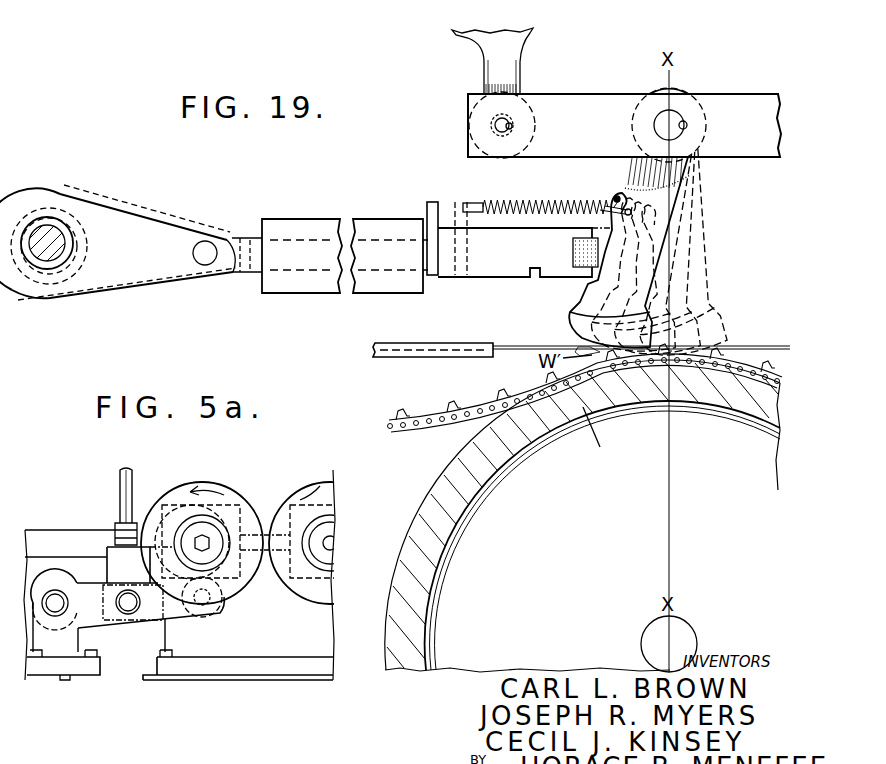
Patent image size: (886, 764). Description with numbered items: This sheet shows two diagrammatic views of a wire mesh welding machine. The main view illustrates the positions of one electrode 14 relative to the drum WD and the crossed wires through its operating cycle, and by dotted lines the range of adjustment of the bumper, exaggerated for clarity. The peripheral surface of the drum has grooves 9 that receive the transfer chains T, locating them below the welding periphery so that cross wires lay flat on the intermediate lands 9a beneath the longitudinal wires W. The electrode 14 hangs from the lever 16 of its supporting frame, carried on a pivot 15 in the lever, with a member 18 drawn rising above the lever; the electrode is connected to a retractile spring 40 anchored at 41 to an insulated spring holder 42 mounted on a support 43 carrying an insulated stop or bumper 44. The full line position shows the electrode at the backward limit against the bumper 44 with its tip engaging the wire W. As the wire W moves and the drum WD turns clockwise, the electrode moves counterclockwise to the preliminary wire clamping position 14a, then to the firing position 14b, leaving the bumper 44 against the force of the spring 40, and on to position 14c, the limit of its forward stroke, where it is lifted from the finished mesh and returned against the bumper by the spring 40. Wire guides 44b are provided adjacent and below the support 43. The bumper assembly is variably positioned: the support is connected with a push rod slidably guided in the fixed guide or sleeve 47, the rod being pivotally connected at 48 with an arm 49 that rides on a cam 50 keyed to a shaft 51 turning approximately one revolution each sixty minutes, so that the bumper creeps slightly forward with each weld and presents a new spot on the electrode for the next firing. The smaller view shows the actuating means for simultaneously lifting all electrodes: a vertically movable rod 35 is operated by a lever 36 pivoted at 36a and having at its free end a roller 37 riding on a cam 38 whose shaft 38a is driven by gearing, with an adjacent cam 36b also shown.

In FIG. 19, the grooves 9 is at (418, 490).
In FIG. 19, the intermediate lands 9a is at (456, 450).
In FIG. 19, the electrode 14 is at (700, 222).
In FIG. 19, the preliminary wire clamping position 14a is at (690, 250).
In FIG. 19, the firing position 14b is at (705, 266).
In FIG. 19, the limit of forward stroke 14c is at (712, 288).
In FIG. 19, the pivot pin 15 is at (675, 120).
In FIG. 19, the lever 16 is at (624, 123).
In FIG. 19, the hopper 18 is at (498, 63).
In FIG. 19, the retractile spring 40 is at (552, 200).
In FIG. 19, the anchor 41 is at (466, 204).
In FIG. 19, the insulated spring holder 42 is at (432, 206).
In FIG. 19, the support 43 is at (525, 239).
In FIG. 19, the insulated stop or bumper 44 is at (572, 250).
In FIG. 19, the wire guides 44b is at (447, 357).
In FIG. 19, the fixed guide or sleeve 47 is at (366, 228).
In FIG. 19, the pivotal connection 48 is at (206, 248).
In FIG. 19, the arm 49 is at (150, 222).
In FIG. 19, the cam 50 is at (62, 212).
In FIG. 19, the shaft 51 is at (58, 240).
In FIG. 5A, the vertically movable rod 35 is at (125, 482).
In FIG. 5A, the lever 36 is at (92, 613).
In FIG. 5A, the pivot 36a is at (52, 605).
In FIG. 5A, the roller 36b is at (283, 497).
In FIG. 5A, the roller 37 is at (212, 612).
In FIG. 5A, the cam 38 is at (195, 500).
In FIG. 5A, the cam shaft 38a is at (205, 548).
In FIG. 19, the longitudinal wires W is at (533, 345).
In FIG. 19, the chain link L is at (527, 377).
In FIG. 19, the transfer chains T is at (470, 398).
In FIG. 19, the drum WD is at (606, 434).